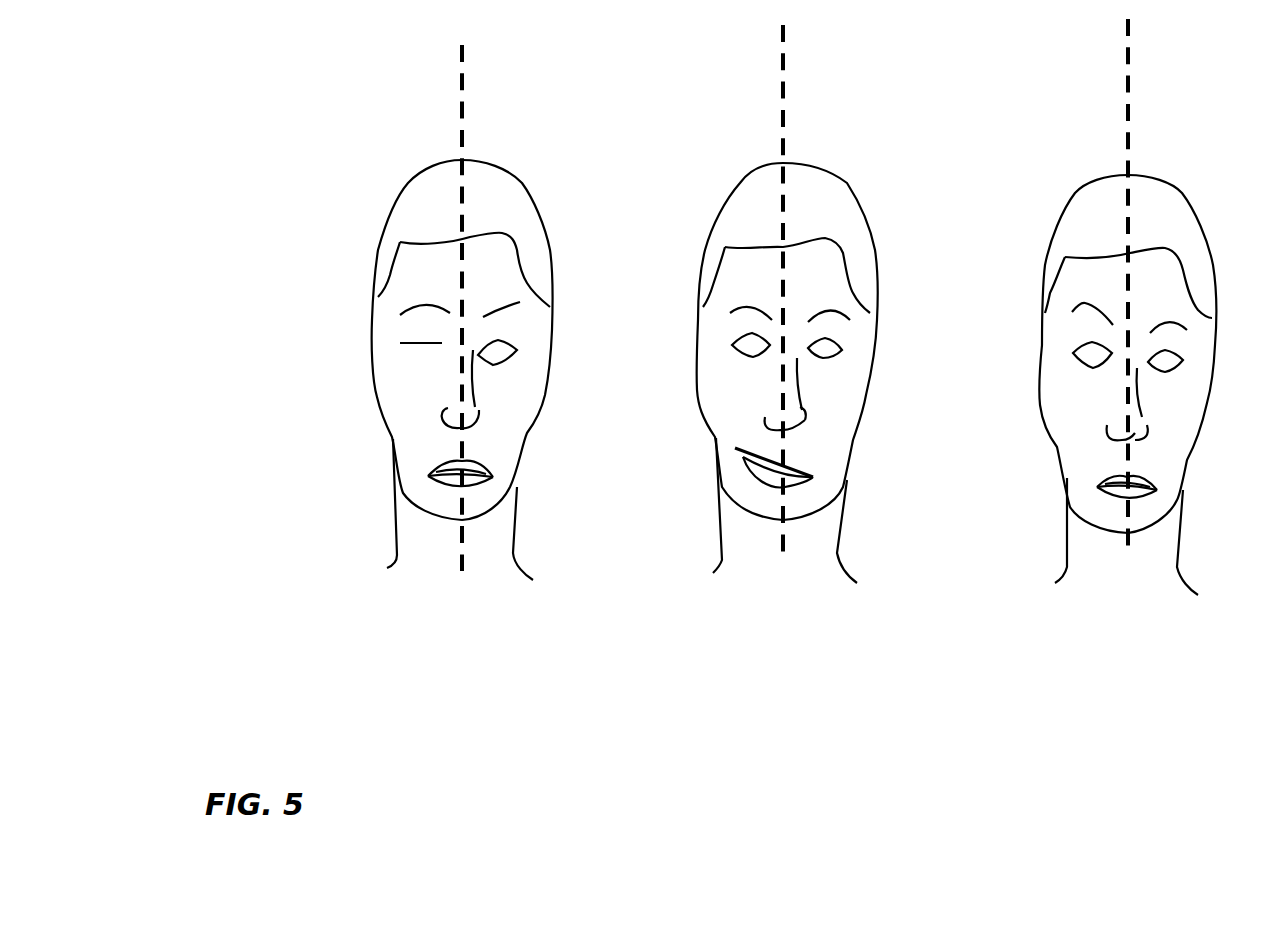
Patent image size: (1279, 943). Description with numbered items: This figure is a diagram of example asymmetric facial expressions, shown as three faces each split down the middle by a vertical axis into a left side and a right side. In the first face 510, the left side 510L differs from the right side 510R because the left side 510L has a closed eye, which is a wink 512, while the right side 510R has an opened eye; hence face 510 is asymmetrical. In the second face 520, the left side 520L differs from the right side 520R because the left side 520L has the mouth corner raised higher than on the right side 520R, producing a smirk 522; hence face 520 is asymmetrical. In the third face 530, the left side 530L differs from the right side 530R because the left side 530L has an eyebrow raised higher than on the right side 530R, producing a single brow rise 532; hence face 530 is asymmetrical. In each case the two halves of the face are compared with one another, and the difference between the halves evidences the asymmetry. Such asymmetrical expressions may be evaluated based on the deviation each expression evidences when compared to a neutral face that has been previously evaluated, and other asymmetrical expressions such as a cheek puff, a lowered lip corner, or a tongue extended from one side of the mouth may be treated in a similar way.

The face 510 is at (452, 368).
The left side 510L is at (447, 183).
The right side 510R is at (492, 183).
The wink 512 is at (405, 340).
The face 520 is at (774, 356).
The left side 520L is at (768, 163).
The right side 520R is at (812, 162).
The smirk 522 is at (750, 463).
The face 530 is at (1119, 355).
The left side 530L is at (1113, 162).
The right side 530R is at (1157, 157).
The single brow rise 532 is at (1085, 303).